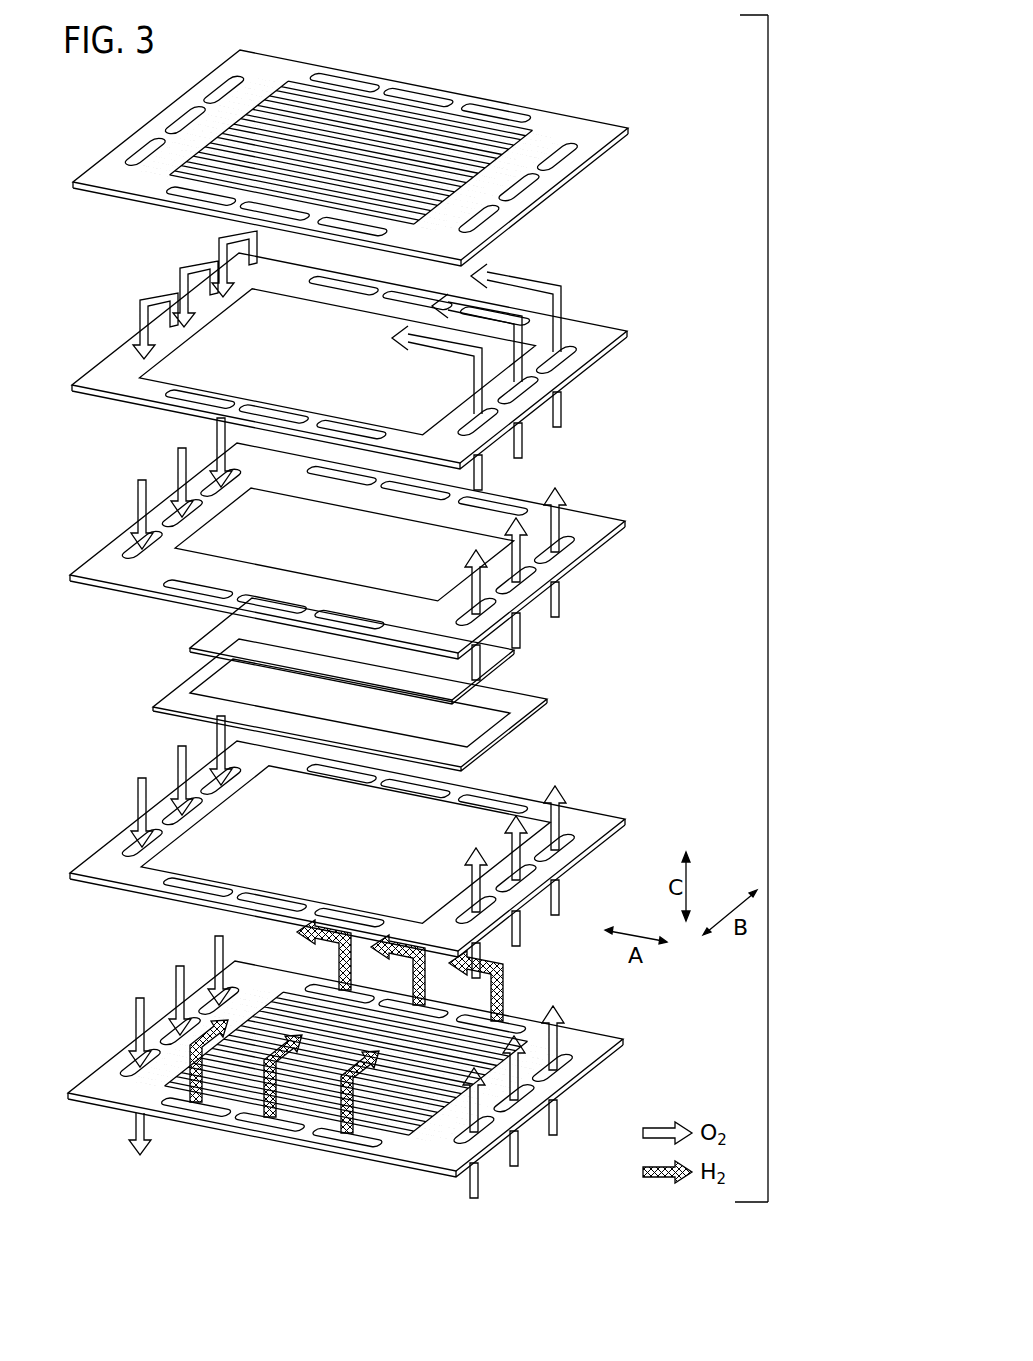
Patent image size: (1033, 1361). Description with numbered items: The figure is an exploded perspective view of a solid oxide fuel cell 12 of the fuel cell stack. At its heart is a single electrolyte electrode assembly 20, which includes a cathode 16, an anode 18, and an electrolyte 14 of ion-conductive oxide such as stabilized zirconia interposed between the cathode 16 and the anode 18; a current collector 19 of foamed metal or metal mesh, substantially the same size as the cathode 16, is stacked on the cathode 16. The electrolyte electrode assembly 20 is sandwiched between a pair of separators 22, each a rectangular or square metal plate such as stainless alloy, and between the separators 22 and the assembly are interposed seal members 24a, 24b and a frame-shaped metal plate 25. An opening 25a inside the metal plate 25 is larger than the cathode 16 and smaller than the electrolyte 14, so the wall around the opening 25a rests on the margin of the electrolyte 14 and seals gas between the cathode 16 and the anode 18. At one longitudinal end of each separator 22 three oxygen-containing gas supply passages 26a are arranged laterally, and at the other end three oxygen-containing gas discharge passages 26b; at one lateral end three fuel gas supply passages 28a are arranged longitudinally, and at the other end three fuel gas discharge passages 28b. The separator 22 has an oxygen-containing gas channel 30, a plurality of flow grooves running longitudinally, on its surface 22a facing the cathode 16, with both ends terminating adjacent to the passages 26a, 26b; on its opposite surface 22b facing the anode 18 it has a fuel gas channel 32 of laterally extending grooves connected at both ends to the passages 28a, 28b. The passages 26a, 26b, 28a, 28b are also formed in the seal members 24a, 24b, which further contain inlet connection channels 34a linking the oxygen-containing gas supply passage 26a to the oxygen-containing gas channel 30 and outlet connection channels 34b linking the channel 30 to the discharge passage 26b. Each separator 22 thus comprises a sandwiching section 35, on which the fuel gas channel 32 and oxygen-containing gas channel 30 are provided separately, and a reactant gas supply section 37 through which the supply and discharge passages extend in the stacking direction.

The solid oxide fuel cell 12 is at (655, 52).
The electrolyte 14 is at (522, 695).
The cathode 16 is at (482, 706).
The anode 18 is at (527, 708).
The current collector 19 is at (372, 668).
The electrolyte electrode assembly 20 is at (402, 684).
The separator 22 is at (370, 610).
The surface 22a is at (600, 163).
The surface 22b is at (578, 125).
The seal member 24a is at (349, 360).
The seal member 24b is at (593, 818).
The metal plate 25 is at (368, 549).
The opening 25a is at (467, 550).
The oxygen-containing gas supply passage 26a is at (528, 183).
The oxygen-containing gas discharge passage 26b is at (150, 150).
The fuel gas supply passage 28a is at (417, 100).
The fuel gas discharge passage 28b is at (197, 193).
The oxygen-containing gas channel 30 is at (262, 88).
The fuel gas channel 32 is at (410, 1127).
The inlet connection channel 34a is at (460, 420).
The outlet connection channel 34b is at (167, 363).
The sandwiching section 35 is at (432, 1128).
The reactant gas supply section 37 is at (532, 1027).